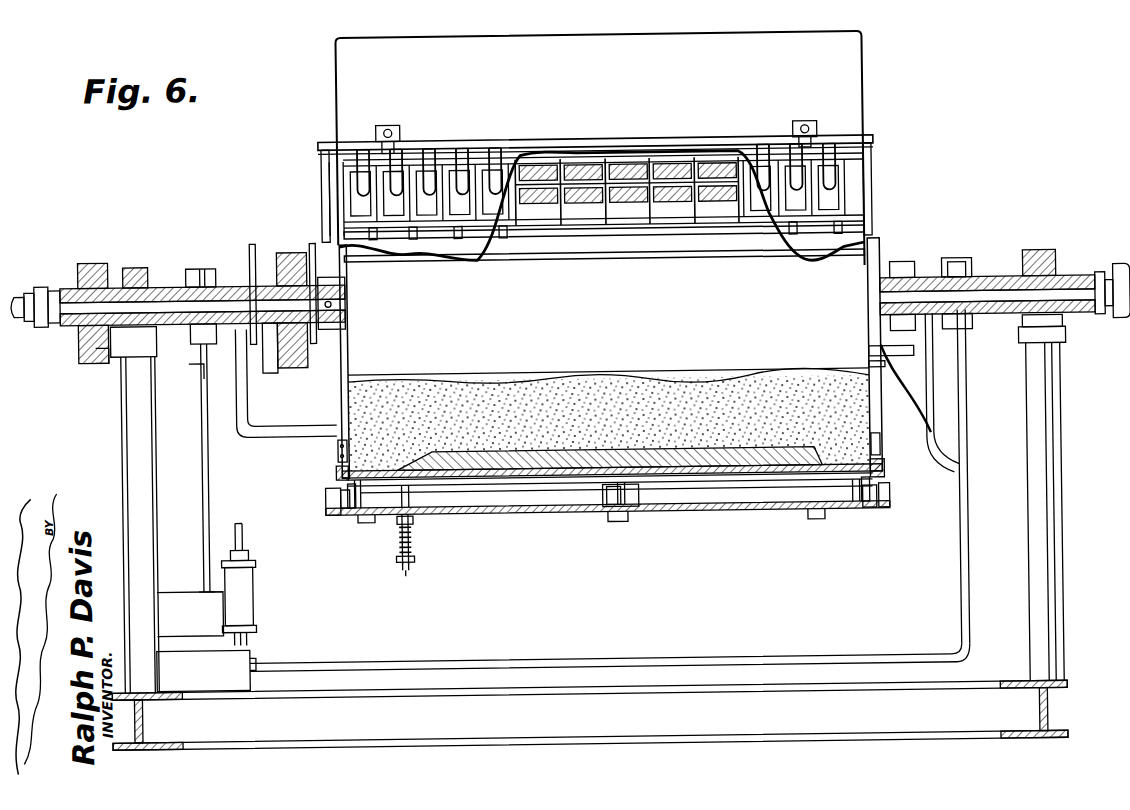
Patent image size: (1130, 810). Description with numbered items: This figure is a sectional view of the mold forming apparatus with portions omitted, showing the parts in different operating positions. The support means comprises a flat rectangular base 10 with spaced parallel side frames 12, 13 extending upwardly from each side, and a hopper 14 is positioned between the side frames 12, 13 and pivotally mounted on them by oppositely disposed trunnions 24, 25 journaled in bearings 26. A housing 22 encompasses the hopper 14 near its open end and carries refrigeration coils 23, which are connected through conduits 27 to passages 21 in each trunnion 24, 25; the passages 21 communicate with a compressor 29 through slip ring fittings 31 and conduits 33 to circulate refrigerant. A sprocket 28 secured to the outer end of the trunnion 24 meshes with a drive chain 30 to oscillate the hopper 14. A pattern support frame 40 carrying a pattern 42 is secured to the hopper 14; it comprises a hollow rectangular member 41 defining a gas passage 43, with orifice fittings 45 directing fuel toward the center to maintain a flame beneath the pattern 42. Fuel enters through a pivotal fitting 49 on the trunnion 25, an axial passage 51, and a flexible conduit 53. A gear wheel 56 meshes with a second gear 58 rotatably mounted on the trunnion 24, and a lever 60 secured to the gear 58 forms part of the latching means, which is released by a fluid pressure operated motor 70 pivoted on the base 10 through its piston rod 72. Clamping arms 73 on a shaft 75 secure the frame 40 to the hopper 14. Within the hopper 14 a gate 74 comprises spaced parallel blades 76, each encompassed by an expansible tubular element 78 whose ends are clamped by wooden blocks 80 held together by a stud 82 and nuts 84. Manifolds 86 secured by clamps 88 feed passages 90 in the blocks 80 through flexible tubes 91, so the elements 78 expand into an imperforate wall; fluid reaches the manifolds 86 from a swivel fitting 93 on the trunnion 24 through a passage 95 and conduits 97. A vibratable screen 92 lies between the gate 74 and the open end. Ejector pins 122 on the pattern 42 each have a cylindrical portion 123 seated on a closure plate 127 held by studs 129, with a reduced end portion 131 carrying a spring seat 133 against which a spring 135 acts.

The base 10 is at (963, 712).
The side frame 12 is at (118, 398).
The side frame 13 is at (1060, 609).
The hopper 14 is at (430, 50).
The passages 21 is at (218, 283).
The housing 22 is at (336, 455).
The refrigeration coils 23 is at (336, 472).
The trunnion 24 is at (178, 285).
The trunnion 25 is at (1090, 324).
The bearings 26 is at (135, 265).
The conduits 27 is at (270, 438).
The sprocket 28 is at (82, 322).
The compressor 29 is at (204, 621).
The drive chain 30 is at (95, 357).
The slip ring fittings 31 is at (218, 267).
The conduits 33 is at (200, 498).
The pattern support frame 40 is at (525, 500).
The rectangular member 41 is at (338, 502).
The pattern 42 is at (712, 480).
The gas passage 43 is at (347, 510).
The orifice fittings 45 is at (331, 517).
The pivotal fitting 49 is at (1120, 330).
The axial passage 51 is at (990, 287).
The flexible conduit 53 is at (950, 476).
The gear wheel 56 is at (292, 367).
The second gear 58 is at (292, 252).
The lever 60 is at (268, 372).
The fluid pressure operated motor 70 is at (251, 584).
The piston rod 72 is at (241, 534).
The clamping arms 73 is at (366, 524).
The gate 74 is at (655, 264).
The shaft 75 is at (892, 374).
The blades 76 is at (608, 160).
The expansible tubular elements 78 is at (530, 206).
The wooden blocks 80 is at (497, 160).
The stud 82 is at (331, 199).
The nut 84 is at (325, 174).
The manifolds 86 is at (520, 150).
The clamps 88 is at (402, 128).
The passages 90 is at (580, 206).
The flexible tubes 91 is at (395, 160).
The screen 92 is at (515, 263).
The swivel fitting 93 is at (45, 285).
The passage 95 is at (186, 362).
The conduits 97 is at (322, 160).
The ejector pins 122 is at (410, 545).
The cylindrical portion 123 is at (406, 497).
The closure plate 127 is at (600, 496).
The studs 129 is at (848, 497).
The reduced end portion 131 is at (401, 577).
The spring seat 133 is at (410, 565).
The spring 135 is at (410, 521).